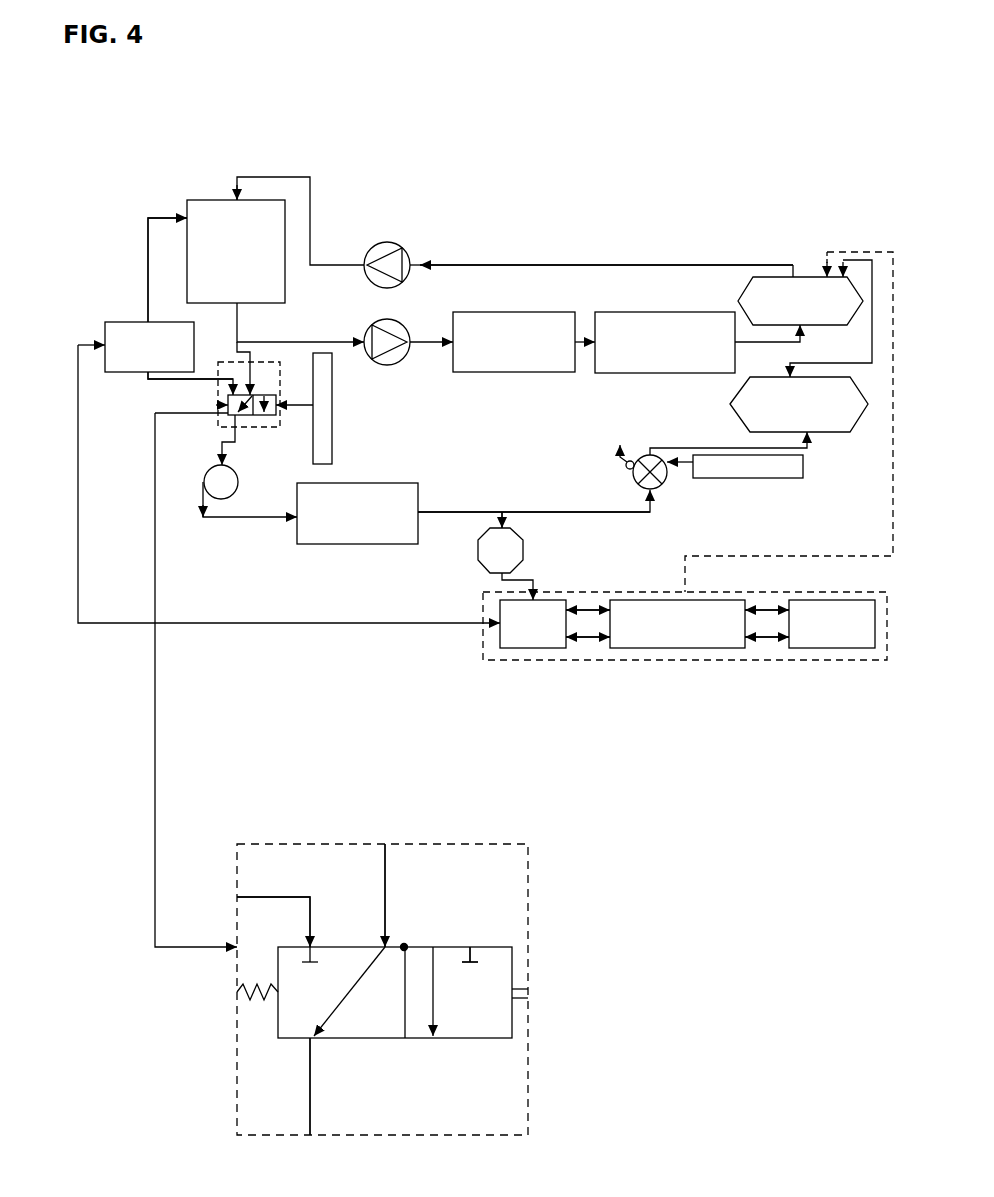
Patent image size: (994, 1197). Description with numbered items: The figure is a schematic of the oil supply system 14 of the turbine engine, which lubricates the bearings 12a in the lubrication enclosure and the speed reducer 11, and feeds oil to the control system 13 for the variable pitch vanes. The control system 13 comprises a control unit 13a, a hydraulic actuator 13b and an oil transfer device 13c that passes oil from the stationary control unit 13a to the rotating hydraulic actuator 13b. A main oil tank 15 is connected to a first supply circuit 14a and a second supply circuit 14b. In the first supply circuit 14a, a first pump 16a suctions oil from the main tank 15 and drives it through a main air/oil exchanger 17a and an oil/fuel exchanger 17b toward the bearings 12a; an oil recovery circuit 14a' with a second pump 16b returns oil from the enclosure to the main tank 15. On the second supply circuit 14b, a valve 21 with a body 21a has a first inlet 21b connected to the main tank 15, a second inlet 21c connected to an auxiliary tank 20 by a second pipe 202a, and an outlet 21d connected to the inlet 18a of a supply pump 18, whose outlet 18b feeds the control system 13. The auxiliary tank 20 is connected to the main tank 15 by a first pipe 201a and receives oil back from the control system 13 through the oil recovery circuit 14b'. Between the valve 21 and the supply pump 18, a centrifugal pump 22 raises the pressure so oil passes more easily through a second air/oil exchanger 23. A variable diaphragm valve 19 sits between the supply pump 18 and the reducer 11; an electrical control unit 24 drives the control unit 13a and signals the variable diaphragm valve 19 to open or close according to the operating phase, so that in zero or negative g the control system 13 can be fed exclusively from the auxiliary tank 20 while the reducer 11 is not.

The speed reducer 11 is at (858, 410).
The bearings 12a is at (852, 302).
The control system 13 is at (657, 660).
The control unit 13a is at (535, 648).
The hydraulic actuator 13b is at (815, 648).
The oil transfer device 13c is at (700, 648).
The oil supply system 14 is at (563, 222).
The first supply circuit 14a is at (449, 379).
The oil recovery circuit 14a' is at (606, 232).
The second supply circuit 14b is at (534, 483).
The oil recovery circuit 14b' is at (289, 515).
The main oil tank 15 is at (215, 200).
The first pump 16a is at (385, 365).
The second pump 16b is at (410, 258).
The main air/oil exchanger 17a is at (520, 365).
The oil/fuel exchanger 17b is at (645, 365).
The supply pump 18 is at (523, 555).
The inlet 18a is at (510, 530).
The outlet 18b is at (512, 575).
The variable diaphragm valve 19 is at (667, 472).
The auxiliary tank 20 is at (105, 335).
The first pipe 201a is at (148, 233).
The second pipe 202a is at (157, 380).
The valve 21 is at (480, 1095).
The body 21a is at (478, 947).
The first inlet 21b is at (385, 945).
The second inlet 21c is at (312, 942).
The outlet 21d is at (313, 1040).
The centrifugal pump 22 is at (222, 490).
The second air/oil exchanger 23 is at (365, 544).
The electrical control unit 24 is at (325, 370).